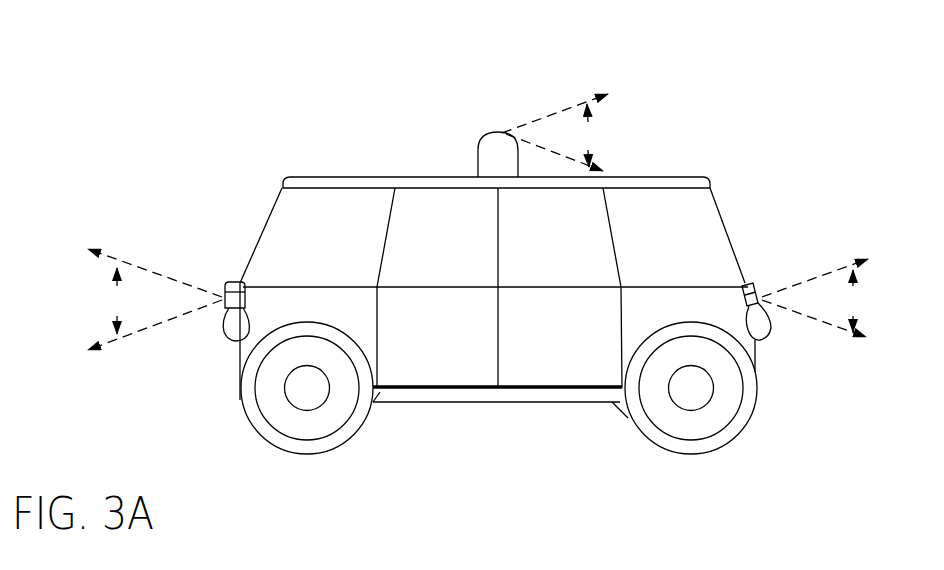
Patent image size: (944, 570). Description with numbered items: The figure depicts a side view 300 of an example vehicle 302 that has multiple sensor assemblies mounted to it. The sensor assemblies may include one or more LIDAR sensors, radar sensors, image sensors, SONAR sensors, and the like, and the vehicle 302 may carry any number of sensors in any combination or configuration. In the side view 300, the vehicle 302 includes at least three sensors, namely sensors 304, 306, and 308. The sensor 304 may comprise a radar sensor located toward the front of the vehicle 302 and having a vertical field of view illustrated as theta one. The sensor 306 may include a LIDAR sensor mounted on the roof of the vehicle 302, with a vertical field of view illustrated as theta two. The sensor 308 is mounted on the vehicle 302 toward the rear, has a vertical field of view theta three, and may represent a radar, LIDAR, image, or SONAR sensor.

The side view 300 is at (113, 62).
The vehicle 302 is at (276, 177).
The sensor 304 is at (220, 277).
The sensor 306 is at (472, 167).
The sensor 308 is at (762, 282).